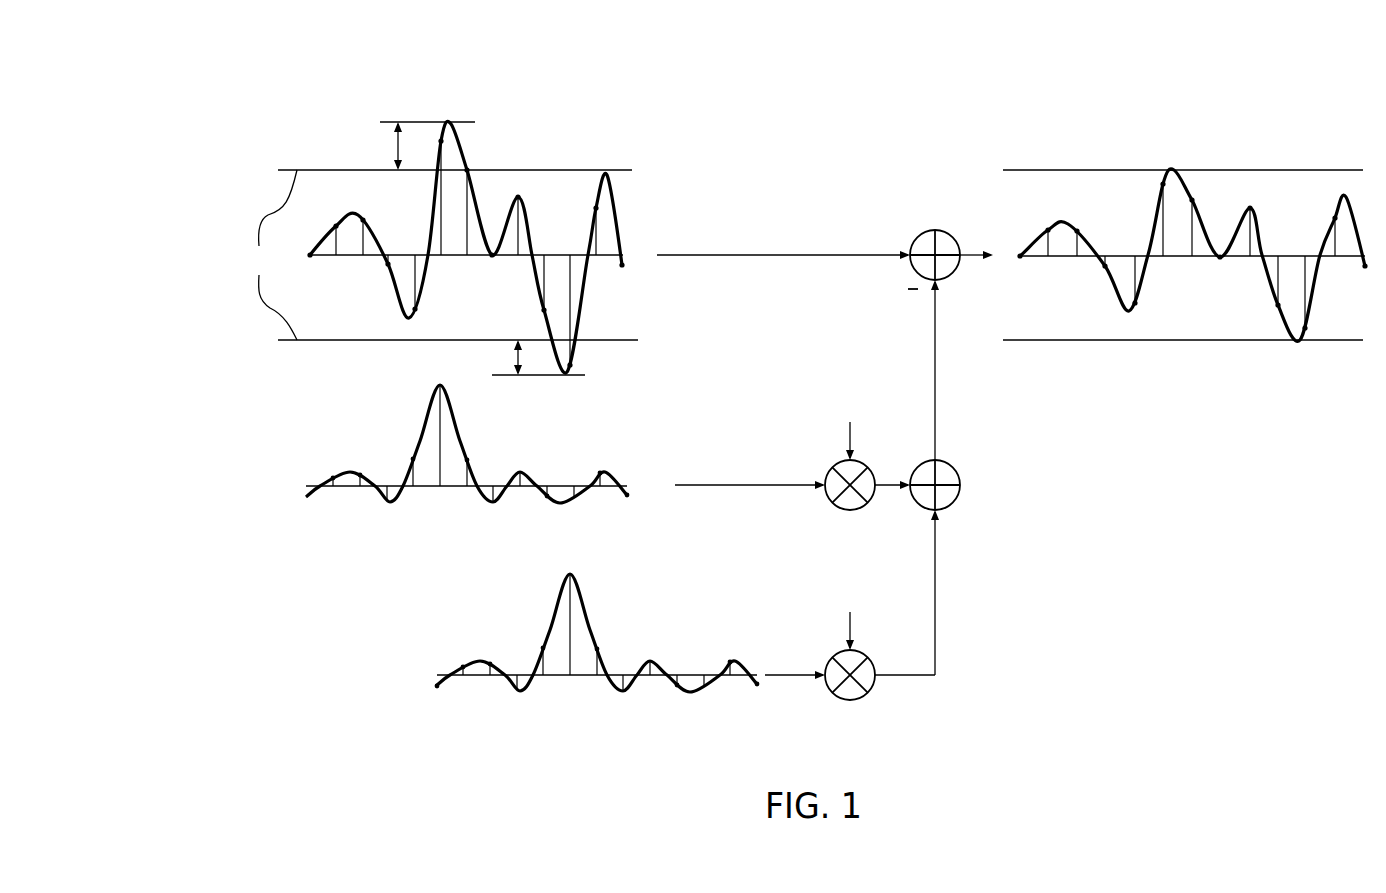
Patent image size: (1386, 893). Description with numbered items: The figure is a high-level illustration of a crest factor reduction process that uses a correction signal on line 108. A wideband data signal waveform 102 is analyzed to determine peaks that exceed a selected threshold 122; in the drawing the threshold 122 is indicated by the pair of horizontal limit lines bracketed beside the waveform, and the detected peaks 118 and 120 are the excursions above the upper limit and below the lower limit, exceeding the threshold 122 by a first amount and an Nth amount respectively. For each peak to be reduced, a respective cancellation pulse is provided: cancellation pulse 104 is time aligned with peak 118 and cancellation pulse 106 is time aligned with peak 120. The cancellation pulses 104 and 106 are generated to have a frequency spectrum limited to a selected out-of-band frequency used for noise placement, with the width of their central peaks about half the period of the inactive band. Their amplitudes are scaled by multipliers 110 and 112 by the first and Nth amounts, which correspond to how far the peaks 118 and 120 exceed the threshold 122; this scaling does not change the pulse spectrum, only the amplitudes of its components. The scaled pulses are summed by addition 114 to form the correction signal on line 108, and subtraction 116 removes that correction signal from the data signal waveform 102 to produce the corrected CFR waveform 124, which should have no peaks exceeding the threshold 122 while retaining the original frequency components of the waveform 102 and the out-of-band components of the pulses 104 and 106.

The wideband data signal waveform 102 is at (232, 230).
The cancellation pulse 104 is at (238, 475).
The cancellation pulse 106 is at (393, 660).
The line carrying correction signal 108 is at (935, 367).
The multiplier 110 is at (826, 466).
The multiplier 112 is at (826, 656).
The addition 114 is at (958, 470).
The subtraction 116 is at (928, 234).
The peak 118 is at (452, 120).
The peak 120 is at (565, 377).
The selected threshold 122 is at (275, 255).
The corrected CFR waveform 124 is at (1045, 292).